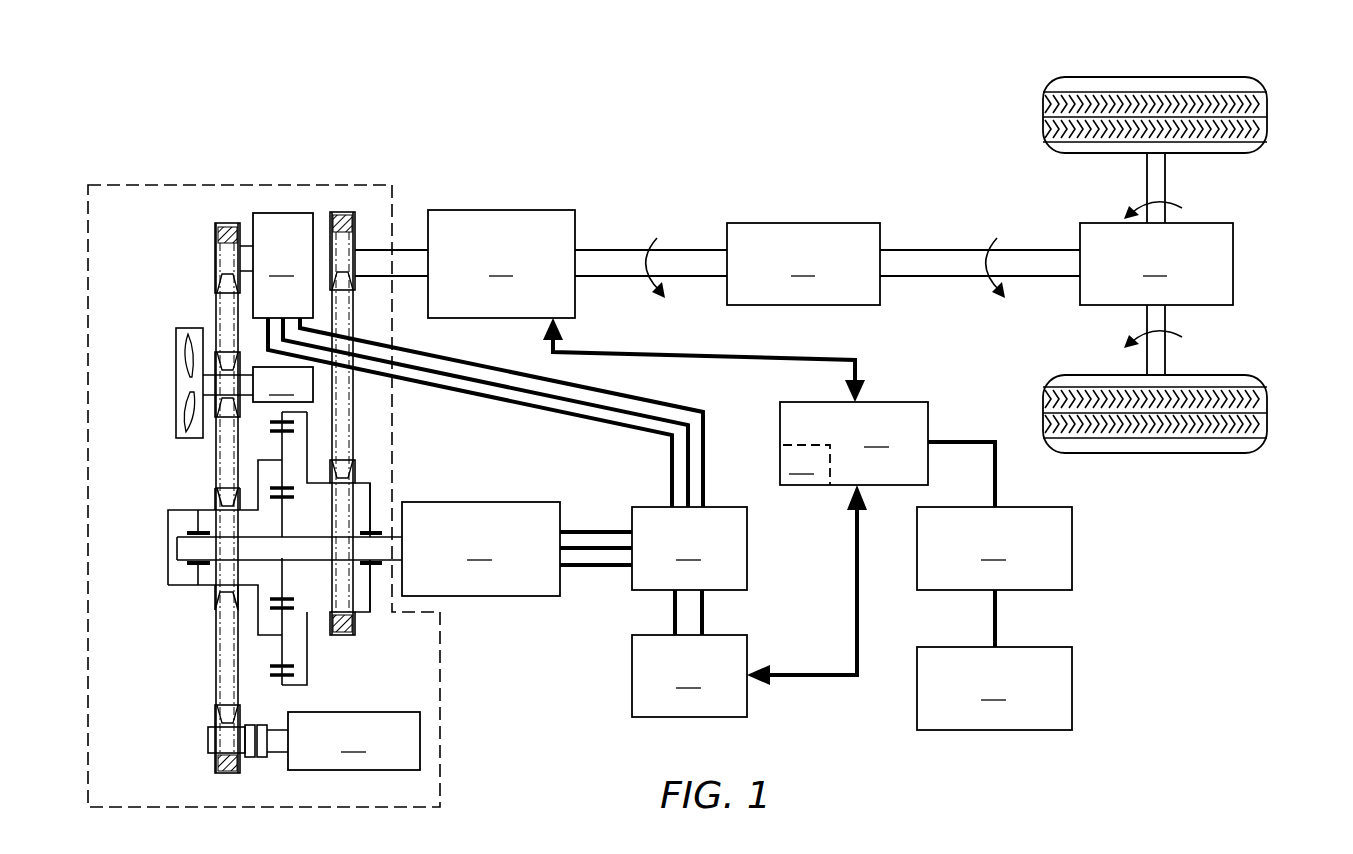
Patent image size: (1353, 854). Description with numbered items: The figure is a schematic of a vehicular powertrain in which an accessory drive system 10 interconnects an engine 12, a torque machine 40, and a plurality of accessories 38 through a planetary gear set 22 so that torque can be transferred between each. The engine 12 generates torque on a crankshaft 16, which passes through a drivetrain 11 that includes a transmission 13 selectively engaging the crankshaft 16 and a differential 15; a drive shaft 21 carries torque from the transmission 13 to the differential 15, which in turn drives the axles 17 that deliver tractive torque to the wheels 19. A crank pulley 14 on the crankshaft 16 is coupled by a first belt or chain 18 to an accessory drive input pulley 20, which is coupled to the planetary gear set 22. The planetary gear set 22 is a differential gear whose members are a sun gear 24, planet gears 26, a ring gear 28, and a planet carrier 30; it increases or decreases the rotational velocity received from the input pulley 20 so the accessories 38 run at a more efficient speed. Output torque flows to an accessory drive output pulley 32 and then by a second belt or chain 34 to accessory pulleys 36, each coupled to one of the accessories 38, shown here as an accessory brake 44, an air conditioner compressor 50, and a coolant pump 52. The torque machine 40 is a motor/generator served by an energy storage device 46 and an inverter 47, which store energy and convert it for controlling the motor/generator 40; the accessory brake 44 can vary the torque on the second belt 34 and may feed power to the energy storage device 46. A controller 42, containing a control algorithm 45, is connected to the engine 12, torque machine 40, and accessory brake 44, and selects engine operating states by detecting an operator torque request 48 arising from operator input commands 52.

The accessory drive system 10 is at (224, 178).
The drivetrain 11 is at (757, 152).
The engine 12 is at (501, 264).
The transmission 13 is at (803, 264).
The crank pulley 14 is at (350, 218).
The differential 15 is at (1156, 264).
The crankshaft 16 is at (402, 250).
The axle 17 is at (1168, 182).
The first belt or chain 18 is at (355, 440).
The wheel 19 is at (1268, 106).
The accessory drive input pulley 20 is at (357, 622).
The drive shaft 21 is at (925, 250).
The planetary gear set 22 is at (372, 494).
The sun gear 24 is at (287, 578).
The planet gears 26 is at (275, 445).
The ring gear 28 is at (270, 423).
The planet carrier 30 is at (168, 522).
The accessory drive output pulley 32 is at (216, 597).
The second belt or chain 34 is at (216, 676).
The accessory pulleys 36 is at (214, 236).
The accessories 38 is at (160, 387).
The torque machine 40 is at (517, 549).
The controller 42 is at (769, 501).
The accessory brake 44 is at (276, 265).
The control algorithm 45 is at (806, 465).
The energy storage device 46 is at (507, 476).
The inverter 47 is at (689, 676).
The operator torque request 48 is at (994, 548).
The air conditioner compressor 50 is at (332, 741).
The coolant pump / operator input commands 52 is at (662, 548).